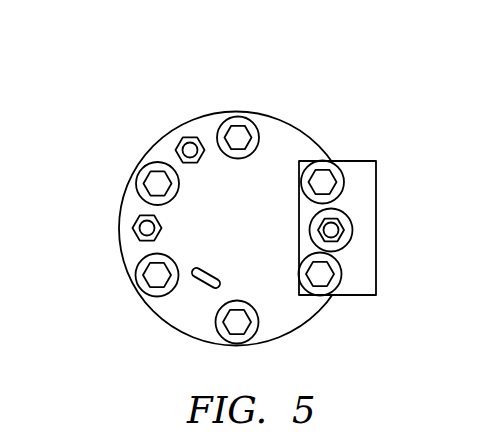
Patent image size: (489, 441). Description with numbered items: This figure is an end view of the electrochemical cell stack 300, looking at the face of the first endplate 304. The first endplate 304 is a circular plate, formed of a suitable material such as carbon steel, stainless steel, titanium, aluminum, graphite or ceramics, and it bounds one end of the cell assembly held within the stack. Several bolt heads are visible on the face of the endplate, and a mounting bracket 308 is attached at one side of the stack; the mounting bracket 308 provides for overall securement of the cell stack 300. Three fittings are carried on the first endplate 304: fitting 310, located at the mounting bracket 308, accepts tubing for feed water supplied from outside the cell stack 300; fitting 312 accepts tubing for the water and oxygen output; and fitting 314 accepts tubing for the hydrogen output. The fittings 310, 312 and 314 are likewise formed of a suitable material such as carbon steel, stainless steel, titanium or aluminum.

The cell stack 300 is at (323, 75).
The first endplate 304 is at (177, 313).
The mounting bracket 308 is at (362, 296).
The fitting 310 is at (346, 232).
The fitting 312 is at (133, 228).
The fitting 314 is at (186, 138).